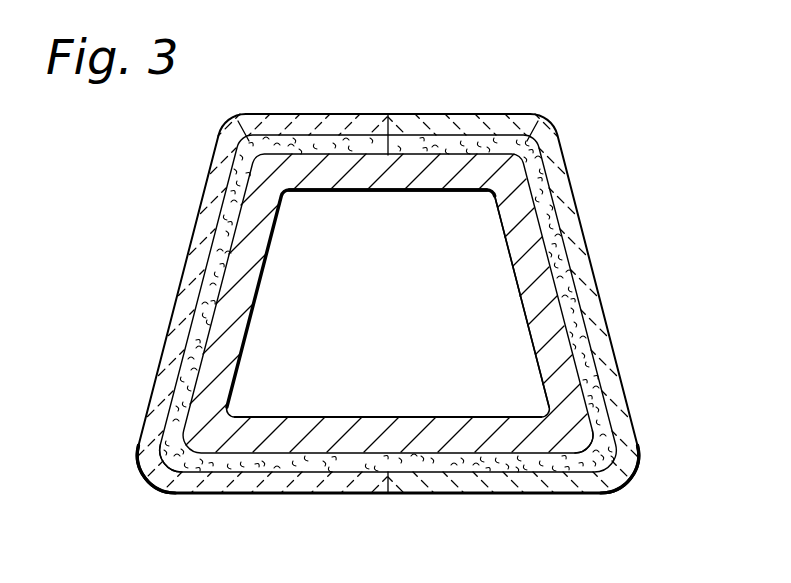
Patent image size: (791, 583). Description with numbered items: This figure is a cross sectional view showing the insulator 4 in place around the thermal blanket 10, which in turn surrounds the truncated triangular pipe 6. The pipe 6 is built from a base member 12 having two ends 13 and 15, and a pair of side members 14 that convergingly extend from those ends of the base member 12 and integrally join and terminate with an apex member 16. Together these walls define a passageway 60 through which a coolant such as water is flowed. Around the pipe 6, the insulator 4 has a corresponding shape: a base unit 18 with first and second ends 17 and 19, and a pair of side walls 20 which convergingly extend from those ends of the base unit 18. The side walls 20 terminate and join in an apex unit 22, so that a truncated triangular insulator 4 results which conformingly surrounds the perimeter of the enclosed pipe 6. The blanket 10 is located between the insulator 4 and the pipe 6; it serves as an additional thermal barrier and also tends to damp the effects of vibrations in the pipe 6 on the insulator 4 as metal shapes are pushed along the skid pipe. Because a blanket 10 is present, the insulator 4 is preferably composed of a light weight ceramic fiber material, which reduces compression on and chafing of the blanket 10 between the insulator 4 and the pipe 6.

The insulator 4 is at (273, 493).
The pipe 6 is at (512, 257).
The blanket 10 is at (580, 312).
The base member 12 is at (375, 417).
The end of base member 13 is at (230, 436).
The side members 14 is at (262, 258).
The end of base member 15 is at (558, 432).
The apex member 16 is at (410, 178).
The first end of base unit 17 is at (175, 478).
The base unit 18 is at (405, 483).
The second end of base unit 19 is at (611, 495).
The side walls 20 is at (208, 220).
The apex unit 22 is at (388, 114).
The passageway 60 is at (390, 305).